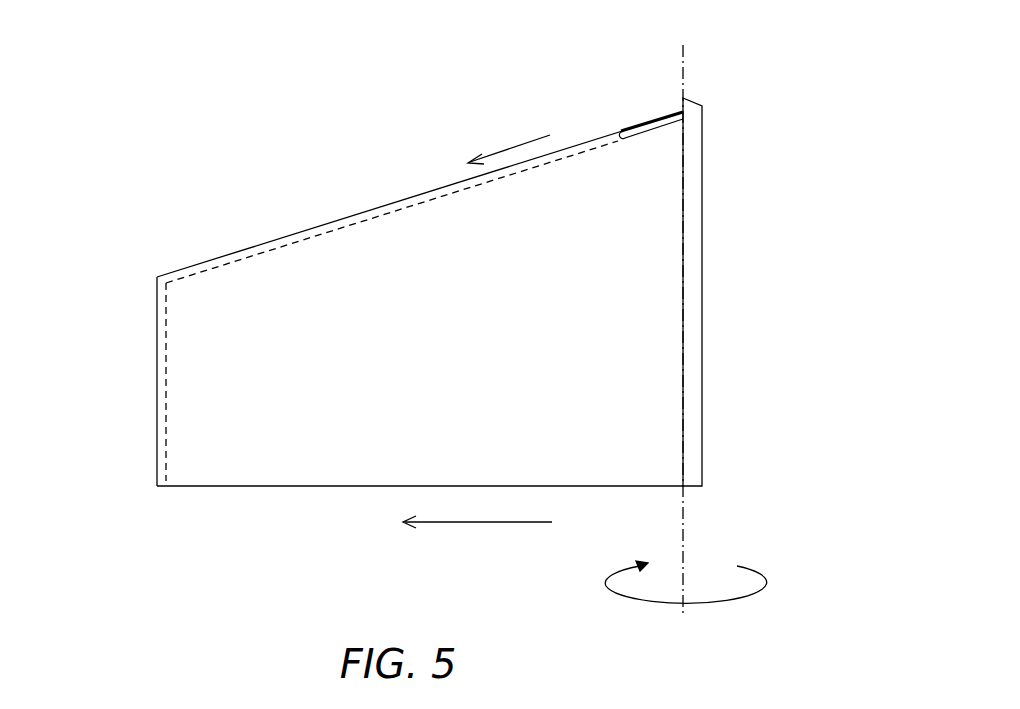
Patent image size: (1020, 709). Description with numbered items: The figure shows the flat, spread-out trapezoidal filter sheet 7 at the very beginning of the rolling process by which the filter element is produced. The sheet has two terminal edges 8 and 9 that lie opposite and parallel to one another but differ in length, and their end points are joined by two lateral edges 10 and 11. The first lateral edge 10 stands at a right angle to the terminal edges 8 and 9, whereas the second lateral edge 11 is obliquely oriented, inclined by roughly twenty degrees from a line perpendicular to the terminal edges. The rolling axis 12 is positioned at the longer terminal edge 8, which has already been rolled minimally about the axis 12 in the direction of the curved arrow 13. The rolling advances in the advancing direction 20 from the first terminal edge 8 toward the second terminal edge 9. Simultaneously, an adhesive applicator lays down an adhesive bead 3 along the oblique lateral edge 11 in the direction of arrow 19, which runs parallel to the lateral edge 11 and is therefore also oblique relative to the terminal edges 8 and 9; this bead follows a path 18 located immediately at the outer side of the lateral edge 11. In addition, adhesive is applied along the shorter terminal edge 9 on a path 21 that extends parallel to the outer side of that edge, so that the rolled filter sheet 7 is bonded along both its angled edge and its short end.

The adhesive bead 3 is at (640, 130).
The filter sheet 7 is at (305, 129).
The terminal edge 8 is at (684, 242).
The terminal edge 9 is at (156, 442).
The lateral edge 10 is at (298, 487).
The lateral edge 11 is at (288, 234).
The axis 12 is at (685, 57).
The arrow 13 is at (605, 588).
The path 18 is at (421, 198).
The arrow 19 is at (515, 147).
The advancing direction 20 is at (462, 523).
The path 21 is at (167, 338).